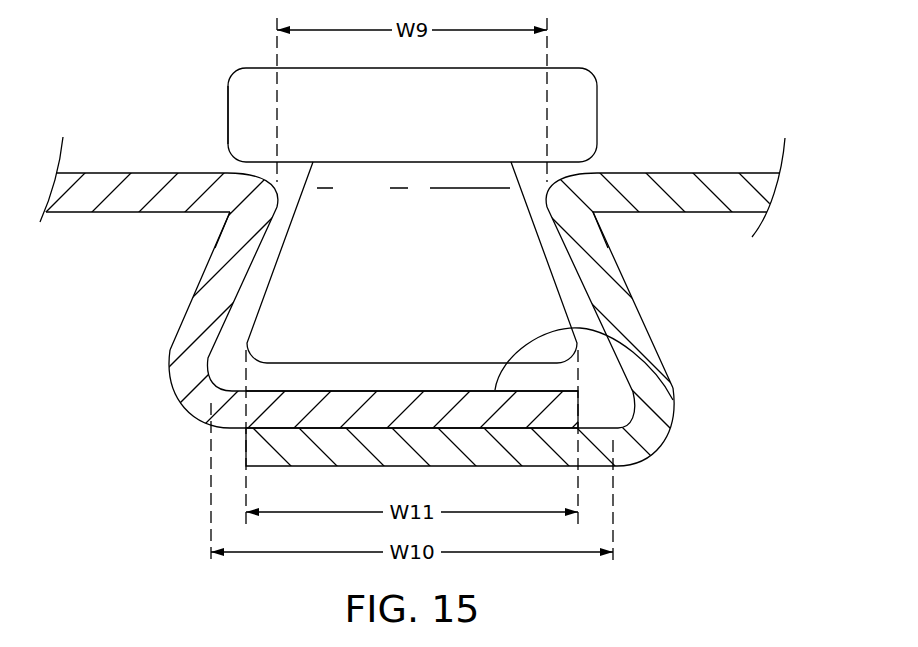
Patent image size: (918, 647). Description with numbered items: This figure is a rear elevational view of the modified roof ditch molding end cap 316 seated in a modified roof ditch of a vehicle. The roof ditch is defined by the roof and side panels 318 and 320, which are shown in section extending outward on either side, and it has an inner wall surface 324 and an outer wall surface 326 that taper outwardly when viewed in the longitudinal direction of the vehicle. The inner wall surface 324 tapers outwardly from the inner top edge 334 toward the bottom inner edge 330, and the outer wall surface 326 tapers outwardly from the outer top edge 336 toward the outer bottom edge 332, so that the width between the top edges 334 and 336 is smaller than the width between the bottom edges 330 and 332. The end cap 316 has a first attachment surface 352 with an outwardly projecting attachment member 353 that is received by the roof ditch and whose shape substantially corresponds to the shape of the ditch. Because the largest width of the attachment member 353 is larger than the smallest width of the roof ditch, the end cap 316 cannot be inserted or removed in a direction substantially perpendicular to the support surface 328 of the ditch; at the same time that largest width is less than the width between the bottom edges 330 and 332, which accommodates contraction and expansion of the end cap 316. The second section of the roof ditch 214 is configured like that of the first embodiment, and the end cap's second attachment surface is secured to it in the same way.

The second section of the roof ditch 214 is at (352, 378).
The roof ditch molding end cap 316 is at (598, 71).
The roof panel 318 is at (711, 173).
The side panel 320 is at (121, 173).
The inner wall surface 324 is at (635, 307).
The outer wall surface 326 is at (175, 341).
The support surface 328 is at (620, 339).
The bottom inner edge 330 is at (668, 436).
The outer bottom edge 332 is at (175, 393).
The inner top edge 334 is at (595, 213).
The outer top edge 336 is at (230, 214).
The first attachment surface 352 is at (228, 121).
The attachment member 353 is at (268, 282).